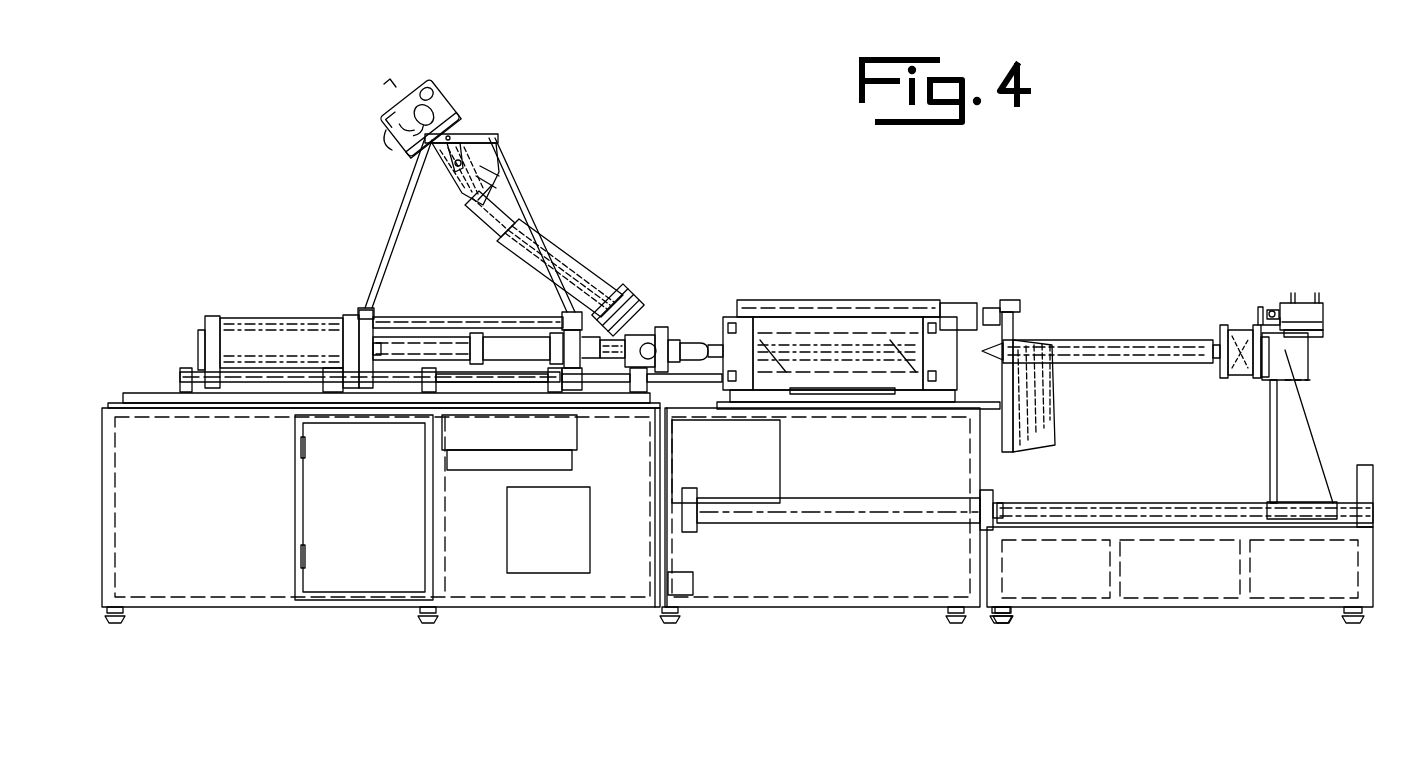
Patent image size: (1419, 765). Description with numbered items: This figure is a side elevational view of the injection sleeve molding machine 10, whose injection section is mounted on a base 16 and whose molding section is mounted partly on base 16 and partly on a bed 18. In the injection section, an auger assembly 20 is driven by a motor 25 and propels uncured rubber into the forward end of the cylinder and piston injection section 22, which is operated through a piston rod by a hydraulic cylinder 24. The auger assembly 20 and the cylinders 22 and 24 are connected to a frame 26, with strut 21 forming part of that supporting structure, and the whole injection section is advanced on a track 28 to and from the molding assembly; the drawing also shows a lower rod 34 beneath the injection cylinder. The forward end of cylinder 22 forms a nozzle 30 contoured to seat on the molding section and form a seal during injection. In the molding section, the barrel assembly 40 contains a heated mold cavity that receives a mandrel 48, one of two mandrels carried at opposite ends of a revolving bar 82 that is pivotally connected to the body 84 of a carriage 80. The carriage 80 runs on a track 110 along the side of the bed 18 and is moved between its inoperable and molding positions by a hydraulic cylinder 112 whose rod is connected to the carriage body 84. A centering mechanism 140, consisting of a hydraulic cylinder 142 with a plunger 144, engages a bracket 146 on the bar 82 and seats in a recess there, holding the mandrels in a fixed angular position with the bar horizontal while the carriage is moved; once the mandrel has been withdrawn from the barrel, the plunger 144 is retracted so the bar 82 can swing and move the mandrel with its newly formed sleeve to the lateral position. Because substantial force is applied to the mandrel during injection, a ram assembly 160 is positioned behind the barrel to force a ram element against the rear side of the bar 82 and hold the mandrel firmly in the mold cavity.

The injection sleeve molding machine 10 is at (626, 153).
The base 16 is at (237, 532).
The bed 18 is at (1298, 598).
The auger assembly 20 is at (588, 258).
The frame strut 21 is at (406, 202).
The cylinder and piston injection section 22 is at (598, 373).
The hydraulic cylinder 24 is at (286, 332).
The motor 25 is at (382, 121).
The frame 26 is at (393, 216).
The track 28 is at (278, 380).
The nozzle 30 is at (672, 338).
The lower guide rod 34 is at (604, 383).
The barrel assembly 40 is at (855, 302).
The mandrel 48 is at (1116, 363).
The carriage 80 is at (1338, 364).
The revolving bar 82 is at (1234, 369).
The carriage body 84 is at (1300, 438).
The track 110 is at (1108, 503).
The hydraulic cylinder 112 is at (880, 512).
The centering mechanism 140 is at (1310, 292).
The hydraulic cylinder 142 is at (1322, 319).
The plunger 144 is at (1274, 309).
The bracket 146 is at (1252, 312).
The ram assembly 160 is at (1044, 326).